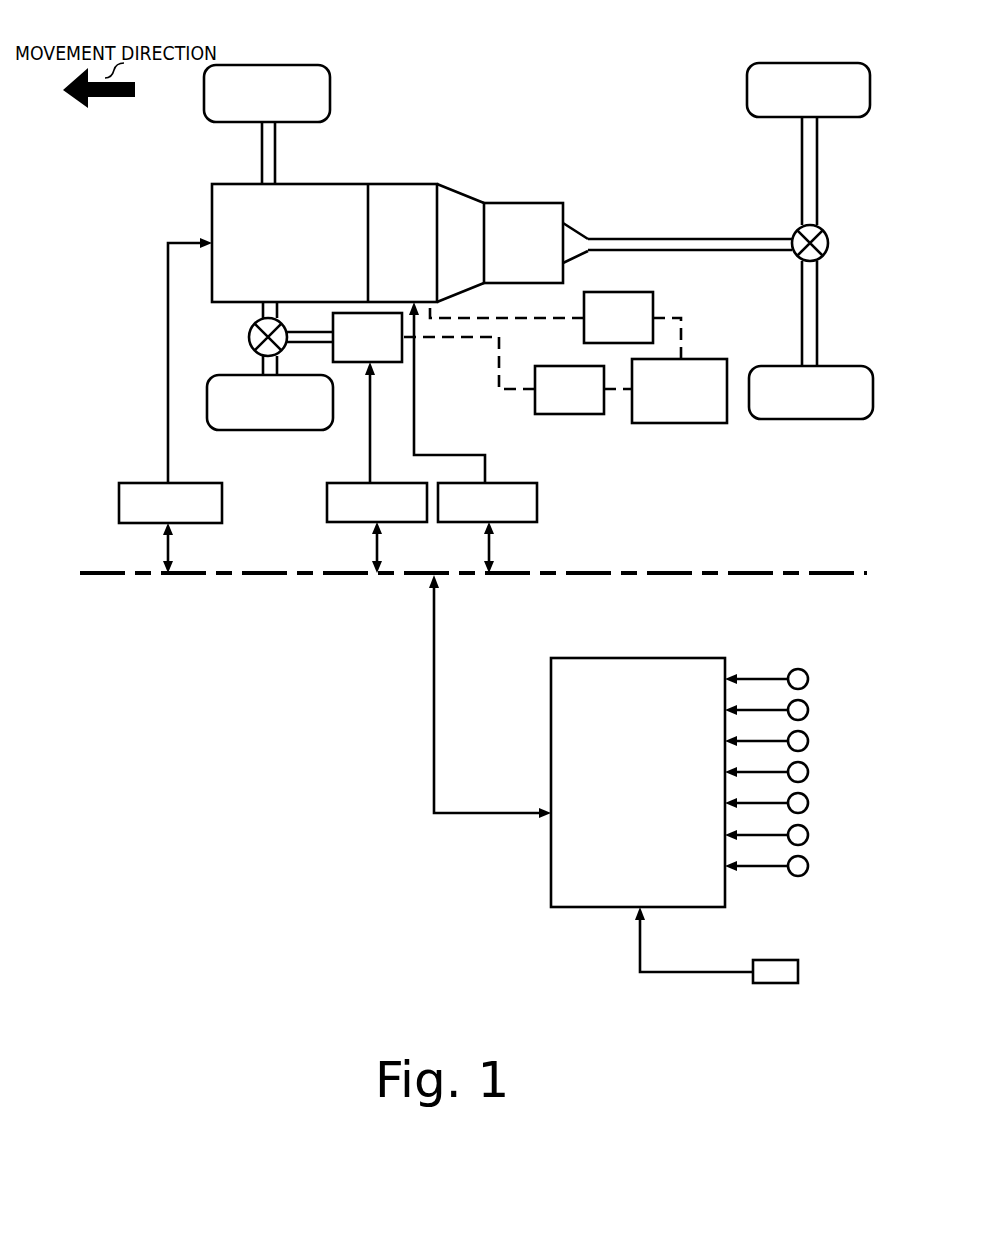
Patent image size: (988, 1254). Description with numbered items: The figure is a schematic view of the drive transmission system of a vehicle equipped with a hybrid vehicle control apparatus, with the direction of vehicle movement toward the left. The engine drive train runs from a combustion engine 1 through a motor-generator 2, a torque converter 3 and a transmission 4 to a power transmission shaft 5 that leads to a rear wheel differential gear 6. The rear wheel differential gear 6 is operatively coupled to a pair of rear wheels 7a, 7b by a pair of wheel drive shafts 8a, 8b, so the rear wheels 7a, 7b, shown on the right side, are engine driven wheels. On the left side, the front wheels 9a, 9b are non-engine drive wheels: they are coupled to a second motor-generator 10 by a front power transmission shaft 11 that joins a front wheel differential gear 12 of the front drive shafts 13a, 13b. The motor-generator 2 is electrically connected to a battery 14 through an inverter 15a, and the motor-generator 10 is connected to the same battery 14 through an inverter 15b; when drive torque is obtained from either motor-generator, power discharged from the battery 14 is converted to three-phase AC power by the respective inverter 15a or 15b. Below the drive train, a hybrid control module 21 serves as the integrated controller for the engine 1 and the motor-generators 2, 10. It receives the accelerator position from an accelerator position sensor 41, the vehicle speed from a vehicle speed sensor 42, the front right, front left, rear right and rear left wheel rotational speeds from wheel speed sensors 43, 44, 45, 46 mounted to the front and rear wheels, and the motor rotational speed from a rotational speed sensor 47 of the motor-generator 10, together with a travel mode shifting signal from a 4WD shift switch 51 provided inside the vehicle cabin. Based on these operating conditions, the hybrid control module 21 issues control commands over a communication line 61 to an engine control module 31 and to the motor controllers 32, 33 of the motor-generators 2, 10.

The combustion engine 1 is at (318, 184).
The motor-generator (MG1) 2 is at (400, 184).
The torque converter 3 is at (456, 195).
The transmission 4 is at (527, 203).
The power transmission shaft 5 is at (681, 238).
The rear wheel differential gear 6 is at (825, 236).
The rear wheel 7a is at (812, 63).
The rear wheel 7b is at (815, 419).
The wheel drive shaft 8a is at (817, 160).
The wheel drive shaft 8b is at (817, 308).
The front wheel 9a is at (272, 65).
The front wheel 9b is at (258, 430).
The second motor-generator (MG2) 10 is at (385, 362).
The front power transmission shaft 11 is at (326, 342).
The front wheel differential gear 12 is at (256, 332).
The front drive shaft 13a is at (262, 155).
The front drive shaft 13b is at (263, 366).
The battery 14 is at (708, 423).
The inverter 15a is at (653, 297).
The inverter 15b is at (583, 414).
The hybrid control module (HCM) 21 is at (658, 658).
The engine control module (ECM) 31 is at (136, 523).
The motor controller (M/C) 32 is at (458, 522).
The motor controller (M/C) 33 is at (348, 522).
The accelerator position sensor 41 is at (808, 679).
The vehicle speed sensor 42 is at (808, 710).
The wheel speed sensor 43 is at (808, 741).
The wheel speed sensor 44 is at (808, 772).
The wheel speed sensor 45 is at (808, 803).
The wheel speed sensor 46 is at (808, 835).
The rotational speed sensor 47 is at (808, 866).
The 4WD shift switch 51 is at (798, 968).
The communication line 61 is at (780, 571).